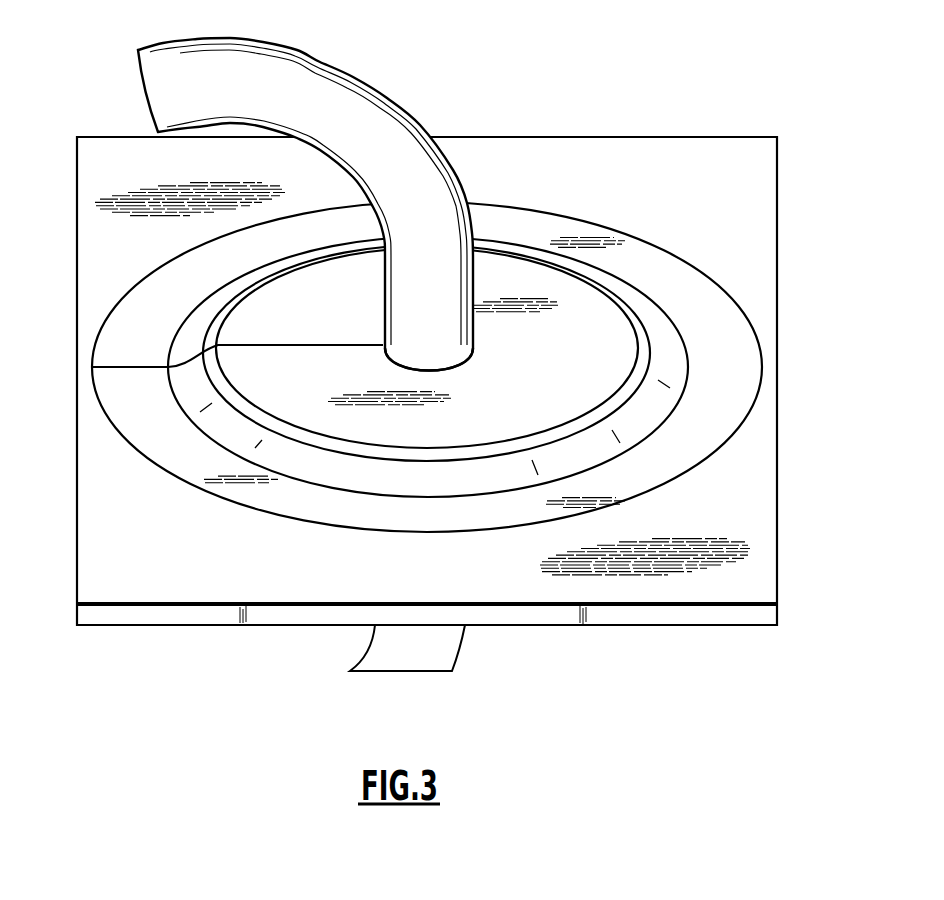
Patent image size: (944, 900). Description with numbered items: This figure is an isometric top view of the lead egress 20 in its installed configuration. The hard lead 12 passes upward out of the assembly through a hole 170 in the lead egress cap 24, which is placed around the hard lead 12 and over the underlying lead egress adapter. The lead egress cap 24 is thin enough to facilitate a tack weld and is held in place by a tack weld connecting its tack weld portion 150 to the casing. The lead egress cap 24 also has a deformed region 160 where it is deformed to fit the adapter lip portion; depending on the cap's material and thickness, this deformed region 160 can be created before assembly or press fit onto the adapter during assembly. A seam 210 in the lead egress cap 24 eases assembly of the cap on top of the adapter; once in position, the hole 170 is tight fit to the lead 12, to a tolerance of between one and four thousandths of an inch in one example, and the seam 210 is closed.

The hard lead 12 is at (388, 112).
The lead egress 20 is at (631, 127).
The lead egress cap 24 is at (564, 404).
The tack weld portion 150 is at (735, 363).
The deformed region 160 is at (642, 408).
The hole 170 is at (473, 350).
The seam 210 is at (284, 345).